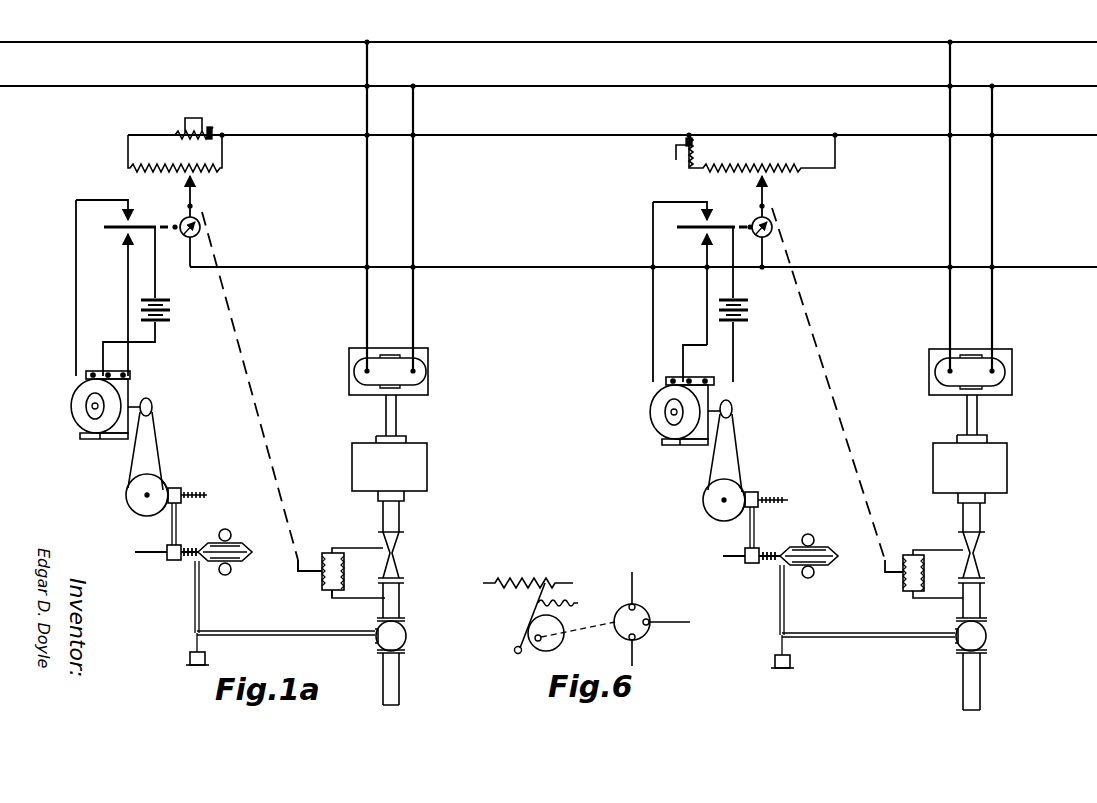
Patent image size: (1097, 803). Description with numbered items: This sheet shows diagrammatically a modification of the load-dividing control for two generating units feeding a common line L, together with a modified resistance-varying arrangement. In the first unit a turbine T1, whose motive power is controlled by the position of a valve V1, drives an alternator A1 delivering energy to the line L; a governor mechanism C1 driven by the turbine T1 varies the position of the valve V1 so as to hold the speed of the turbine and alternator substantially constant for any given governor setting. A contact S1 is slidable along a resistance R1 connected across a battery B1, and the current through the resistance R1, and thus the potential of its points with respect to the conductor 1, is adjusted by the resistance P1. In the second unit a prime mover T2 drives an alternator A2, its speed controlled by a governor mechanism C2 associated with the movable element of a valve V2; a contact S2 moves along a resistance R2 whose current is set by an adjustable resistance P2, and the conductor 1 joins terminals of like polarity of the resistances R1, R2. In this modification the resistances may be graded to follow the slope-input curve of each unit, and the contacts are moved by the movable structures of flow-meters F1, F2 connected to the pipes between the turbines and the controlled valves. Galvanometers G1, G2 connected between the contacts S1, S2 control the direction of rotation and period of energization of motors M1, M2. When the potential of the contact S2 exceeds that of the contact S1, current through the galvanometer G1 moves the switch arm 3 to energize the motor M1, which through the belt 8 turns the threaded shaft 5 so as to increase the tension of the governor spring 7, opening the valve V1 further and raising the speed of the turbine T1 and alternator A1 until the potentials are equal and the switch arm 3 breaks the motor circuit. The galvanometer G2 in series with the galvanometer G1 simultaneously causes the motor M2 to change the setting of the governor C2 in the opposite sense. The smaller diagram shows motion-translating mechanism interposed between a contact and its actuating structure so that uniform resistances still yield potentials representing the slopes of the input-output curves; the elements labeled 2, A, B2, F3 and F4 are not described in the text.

The line L is at (548, 154).
The conductor 1 is at (462, 136).
The line conductor 2 is at (298, 268).
The resistance R1 is at (176, 152).
The resistance P1 is at (182, 135).
The battery B1 is at (212, 128).
The contact S1 is at (195, 195).
The galvanometer G1 is at (183, 242).
The switch contact A is at (133, 212).
The switch arm 3 is at (149, 225).
The shaft 5 is at (134, 246).
The motor M1 is at (88, 391).
The belt 8 is at (133, 462).
The governor spring 7 is at (176, 564).
The governor mechanism C1 is at (232, 534).
The flow-meter F1 is at (407, 320).
The alternator A1 is at (430, 364).
The turbine T1 is at (428, 470).
The valve V1 is at (402, 630).
The solenoid coil F3 is at (293, 410).
The resistance R2 is at (761, 152).
The contact B2 is at (696, 152).
The adjustable resistance P2 is at (680, 160).
The contact S2 is at (768, 195).
The galvanometer G2 is at (769, 238).
The motor M2 is at (664, 426).
The governor mechanism C2 is at (814, 540).
The flow-meter F2 is at (989, 320).
The alternator A2 is at (1006, 384).
The prime mover T2 is at (1008, 470).
The valve V2 is at (988, 632).
The solenoid coil F4 is at (867, 409).